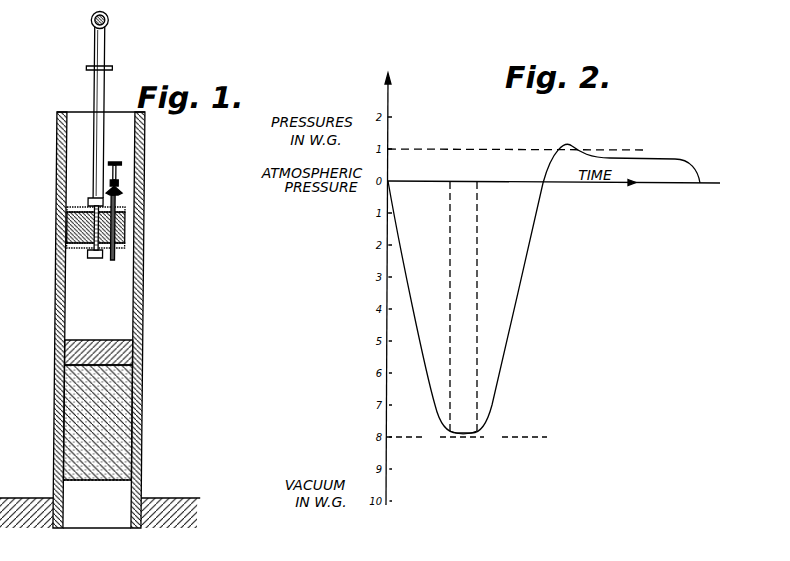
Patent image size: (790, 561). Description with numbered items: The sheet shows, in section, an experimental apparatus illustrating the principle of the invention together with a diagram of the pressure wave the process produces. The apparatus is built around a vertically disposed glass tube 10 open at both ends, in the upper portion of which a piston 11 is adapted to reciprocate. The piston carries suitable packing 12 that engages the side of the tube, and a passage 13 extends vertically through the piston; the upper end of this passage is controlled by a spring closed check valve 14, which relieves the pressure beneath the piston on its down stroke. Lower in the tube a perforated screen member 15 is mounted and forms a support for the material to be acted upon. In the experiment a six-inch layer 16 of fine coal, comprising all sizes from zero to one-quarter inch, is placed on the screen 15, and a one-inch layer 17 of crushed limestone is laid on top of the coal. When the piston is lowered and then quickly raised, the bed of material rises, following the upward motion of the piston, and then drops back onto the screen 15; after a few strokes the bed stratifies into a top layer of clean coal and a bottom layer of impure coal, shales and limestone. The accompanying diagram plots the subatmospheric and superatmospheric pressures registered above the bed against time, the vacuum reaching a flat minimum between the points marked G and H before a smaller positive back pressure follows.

In FIG. 1, the glass tube 10 is at (140, 283).
In FIG. 1, the piston 11 is at (127, 233).
In FIG. 1, the packing 12 is at (69, 240).
In FIG. 1, the passage 13 is at (118, 218).
In FIG. 1, the spring closed check valve 14 is at (118, 192).
In FIG. 1, the perforated screen member 15 is at (88, 486).
In FIG. 1, the layer of fine coal 16 is at (124, 413).
In FIG. 1, the layer of crushed limestone 17 is at (124, 351).
In FIG. 2, the point G is at (431, 437).
In FIG. 2, the point H is at (492, 437).